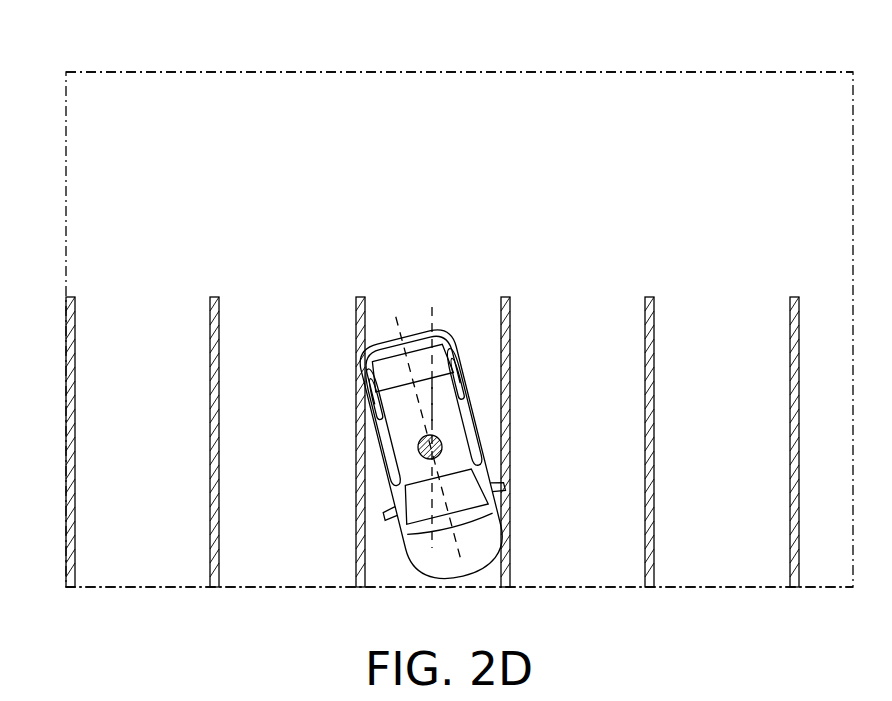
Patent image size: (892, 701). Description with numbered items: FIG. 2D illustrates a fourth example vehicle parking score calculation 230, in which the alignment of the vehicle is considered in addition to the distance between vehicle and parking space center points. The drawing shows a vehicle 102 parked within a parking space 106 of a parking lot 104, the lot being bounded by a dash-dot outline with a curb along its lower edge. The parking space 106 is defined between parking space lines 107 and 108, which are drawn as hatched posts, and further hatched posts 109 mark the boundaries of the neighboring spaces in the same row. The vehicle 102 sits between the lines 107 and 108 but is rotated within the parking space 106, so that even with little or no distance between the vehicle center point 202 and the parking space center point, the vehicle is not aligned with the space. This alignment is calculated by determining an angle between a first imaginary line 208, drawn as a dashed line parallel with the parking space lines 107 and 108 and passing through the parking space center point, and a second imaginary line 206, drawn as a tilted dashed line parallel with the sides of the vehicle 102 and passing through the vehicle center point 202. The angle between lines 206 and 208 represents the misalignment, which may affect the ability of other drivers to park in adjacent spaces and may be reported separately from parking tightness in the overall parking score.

The fourth example vehicle parking score calculation 230 is at (106, 50).
The parking lot 104 is at (460, 72).
The parking space 106 is at (435, 287).
The parking space line 107 is at (513, 322).
The parking space line 108 is at (349, 320).
The parking space boundaries 109 is at (491, 596).
The vehicle 102 is at (418, 576).
The vehicle center point 202 is at (442, 445).
The second imaginary line 206 is at (405, 395).
The first imaginary line 208 is at (437, 415).